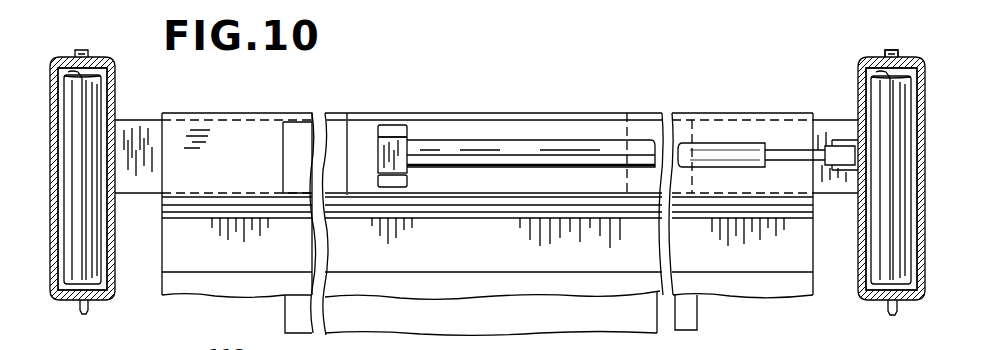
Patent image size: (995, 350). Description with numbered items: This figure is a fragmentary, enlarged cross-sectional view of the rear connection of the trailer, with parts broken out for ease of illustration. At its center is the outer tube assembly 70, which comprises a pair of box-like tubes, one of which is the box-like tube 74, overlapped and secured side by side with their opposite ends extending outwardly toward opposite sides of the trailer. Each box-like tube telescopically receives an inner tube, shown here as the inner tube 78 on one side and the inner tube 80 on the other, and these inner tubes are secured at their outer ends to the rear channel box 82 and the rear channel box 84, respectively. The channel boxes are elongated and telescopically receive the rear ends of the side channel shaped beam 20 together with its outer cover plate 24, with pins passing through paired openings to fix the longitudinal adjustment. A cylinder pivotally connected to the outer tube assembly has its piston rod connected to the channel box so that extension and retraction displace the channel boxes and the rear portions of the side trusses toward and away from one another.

The channel shaped beam 20 is at (113, 100).
The outer cover plate 24 is at (63, 118).
The rear channel box 84 is at (100, 297).
The inner tube 80 is at (143, 137).
The outer tube assembly 70 is at (273, 113).
The box-like tube 74 is at (163, 255).
The inner tube 78 is at (830, 122).
The rear channel box 82 is at (862, 54).